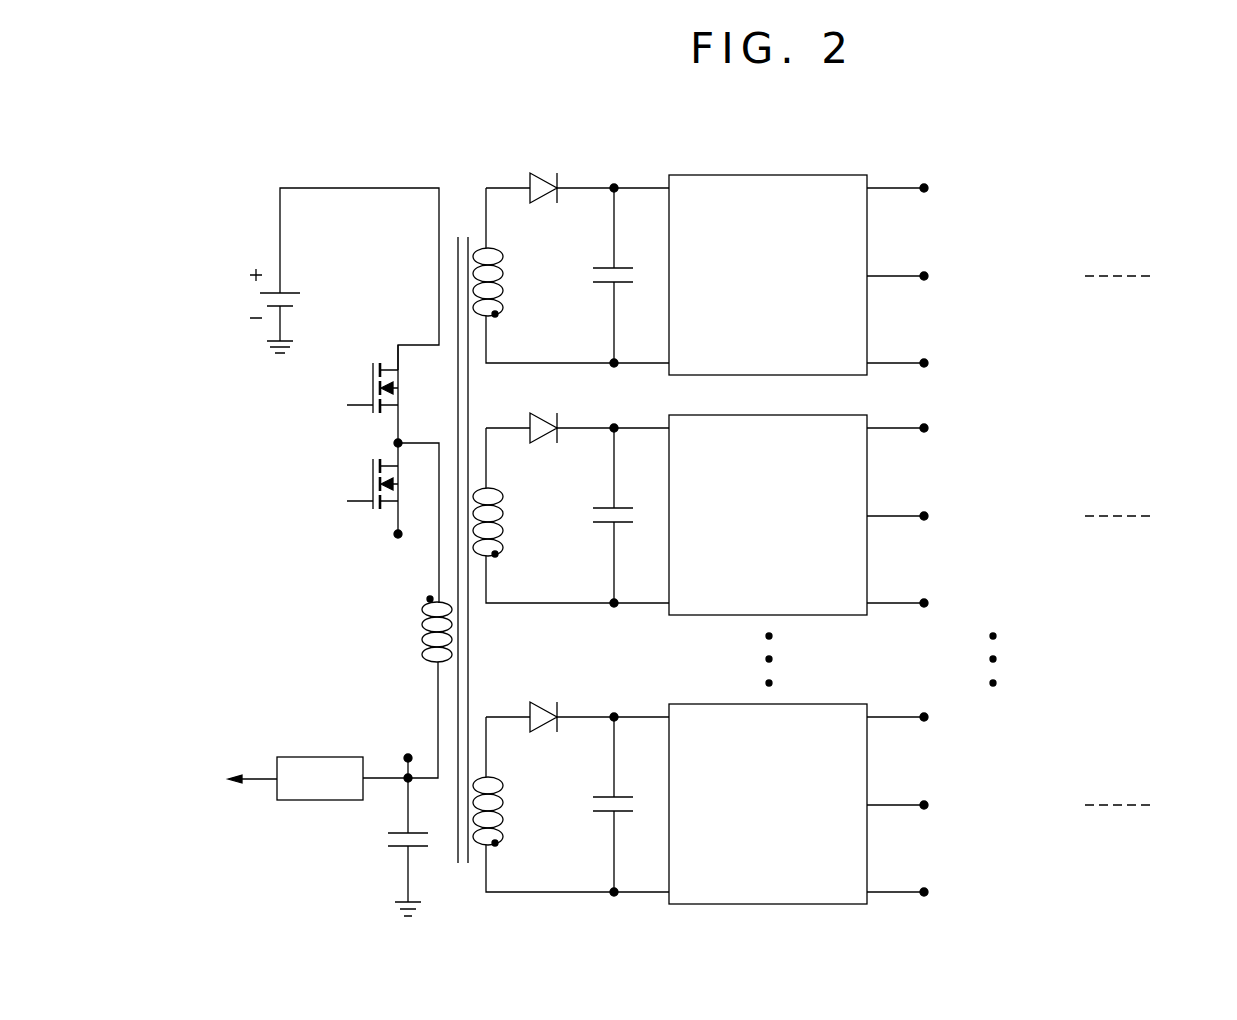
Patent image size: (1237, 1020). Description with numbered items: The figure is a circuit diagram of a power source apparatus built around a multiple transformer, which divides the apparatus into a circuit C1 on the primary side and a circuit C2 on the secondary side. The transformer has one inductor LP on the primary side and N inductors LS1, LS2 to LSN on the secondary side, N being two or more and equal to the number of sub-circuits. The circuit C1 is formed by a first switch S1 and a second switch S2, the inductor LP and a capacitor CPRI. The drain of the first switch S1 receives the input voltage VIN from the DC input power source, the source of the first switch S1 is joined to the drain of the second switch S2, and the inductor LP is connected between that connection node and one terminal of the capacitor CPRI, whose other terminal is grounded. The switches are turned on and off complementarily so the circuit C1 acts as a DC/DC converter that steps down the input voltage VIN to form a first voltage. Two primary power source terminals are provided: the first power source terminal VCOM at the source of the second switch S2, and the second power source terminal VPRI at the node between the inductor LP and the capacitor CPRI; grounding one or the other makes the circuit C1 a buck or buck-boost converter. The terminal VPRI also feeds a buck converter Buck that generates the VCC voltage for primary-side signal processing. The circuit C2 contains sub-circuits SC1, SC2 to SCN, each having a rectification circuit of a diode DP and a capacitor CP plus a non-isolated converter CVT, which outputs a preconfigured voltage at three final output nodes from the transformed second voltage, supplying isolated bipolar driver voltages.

The circuit on the primary side C1 is at (383, 162).
The circuit on the secondary side C2 is at (644, 162).
The input voltage VIN is at (297, 311).
The first switch S1 is at (389, 394).
The second switch S2 is at (389, 488).
The first power source terminal VCOM is at (396, 553).
The inductor on the primary side LP is at (422, 629).
The second power source terminal VPRI is at (404, 752).
The buck converter Buck is at (270, 778).
The capacitor CPRI is at (381, 847).
The diode DP is at (542, 473).
The capacitor CP is at (596, 538).
The inductor on the secondary side LS1 is at (508, 282).
The inductor on the secondary side LS2 is at (508, 522).
The inductor on the secondary side LSN is at (509, 811).
The converter CVT is at (768, 539).
The first sub-circuit SC1 is at (1152, 277).
The second sub-circuit SC2 is at (1152, 517).
The N-th sub-circuit SCN is at (1153, 803).